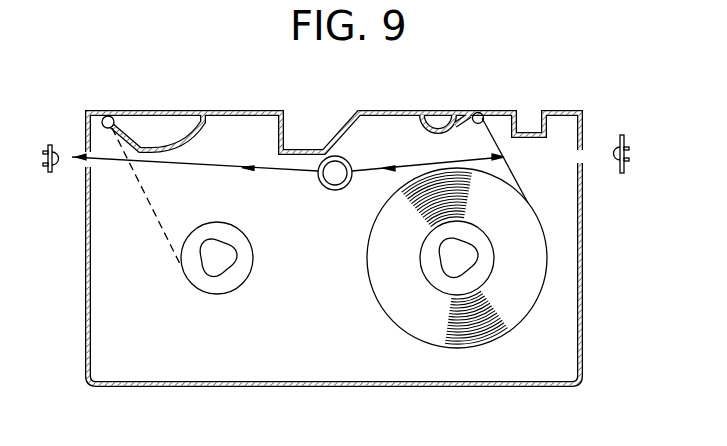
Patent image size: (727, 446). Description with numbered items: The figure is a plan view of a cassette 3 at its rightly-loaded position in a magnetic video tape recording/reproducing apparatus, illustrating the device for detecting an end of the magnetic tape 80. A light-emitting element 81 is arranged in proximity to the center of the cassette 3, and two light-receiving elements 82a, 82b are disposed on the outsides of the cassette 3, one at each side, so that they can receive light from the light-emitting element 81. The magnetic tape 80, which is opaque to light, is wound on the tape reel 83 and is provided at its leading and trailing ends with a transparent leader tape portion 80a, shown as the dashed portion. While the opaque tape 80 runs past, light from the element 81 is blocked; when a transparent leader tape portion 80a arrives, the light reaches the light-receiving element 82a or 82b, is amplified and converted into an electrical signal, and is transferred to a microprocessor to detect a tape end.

The cassette 3 is at (583, 322).
The magnetic tape 80 is at (475, 113).
The transparent leader tape portion 80a is at (158, 226).
The light-emitting element 81 is at (330, 156).
The light-receiving element 82a is at (57, 174).
The light-receiving element 82b is at (615, 170).
The tape reel 83 is at (248, 278).